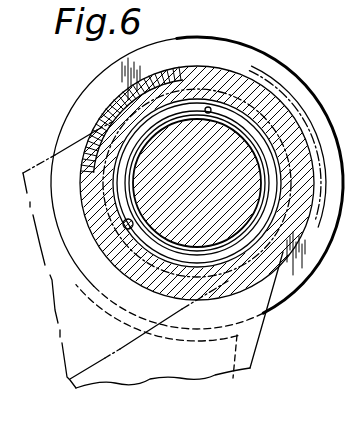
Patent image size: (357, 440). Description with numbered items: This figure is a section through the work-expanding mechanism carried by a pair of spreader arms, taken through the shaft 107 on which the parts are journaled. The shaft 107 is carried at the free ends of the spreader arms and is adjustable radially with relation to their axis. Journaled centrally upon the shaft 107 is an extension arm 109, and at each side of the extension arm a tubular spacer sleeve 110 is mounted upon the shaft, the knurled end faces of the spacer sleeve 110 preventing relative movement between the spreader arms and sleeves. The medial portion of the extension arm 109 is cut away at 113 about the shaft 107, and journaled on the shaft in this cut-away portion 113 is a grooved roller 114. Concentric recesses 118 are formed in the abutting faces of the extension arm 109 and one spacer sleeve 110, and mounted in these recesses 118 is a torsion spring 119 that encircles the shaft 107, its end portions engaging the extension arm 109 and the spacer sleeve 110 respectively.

The shaft 107 is at (250, 135).
The extension arm 109 is at (257, 344).
The tubular spacer sleeve 110 is at (298, 113).
The cut-away portion 113 is at (234, 368).
The grooved roller 114 is at (292, 298).
The concentric recess 118 is at (232, 135).
The torsion spring 119 is at (190, 107).